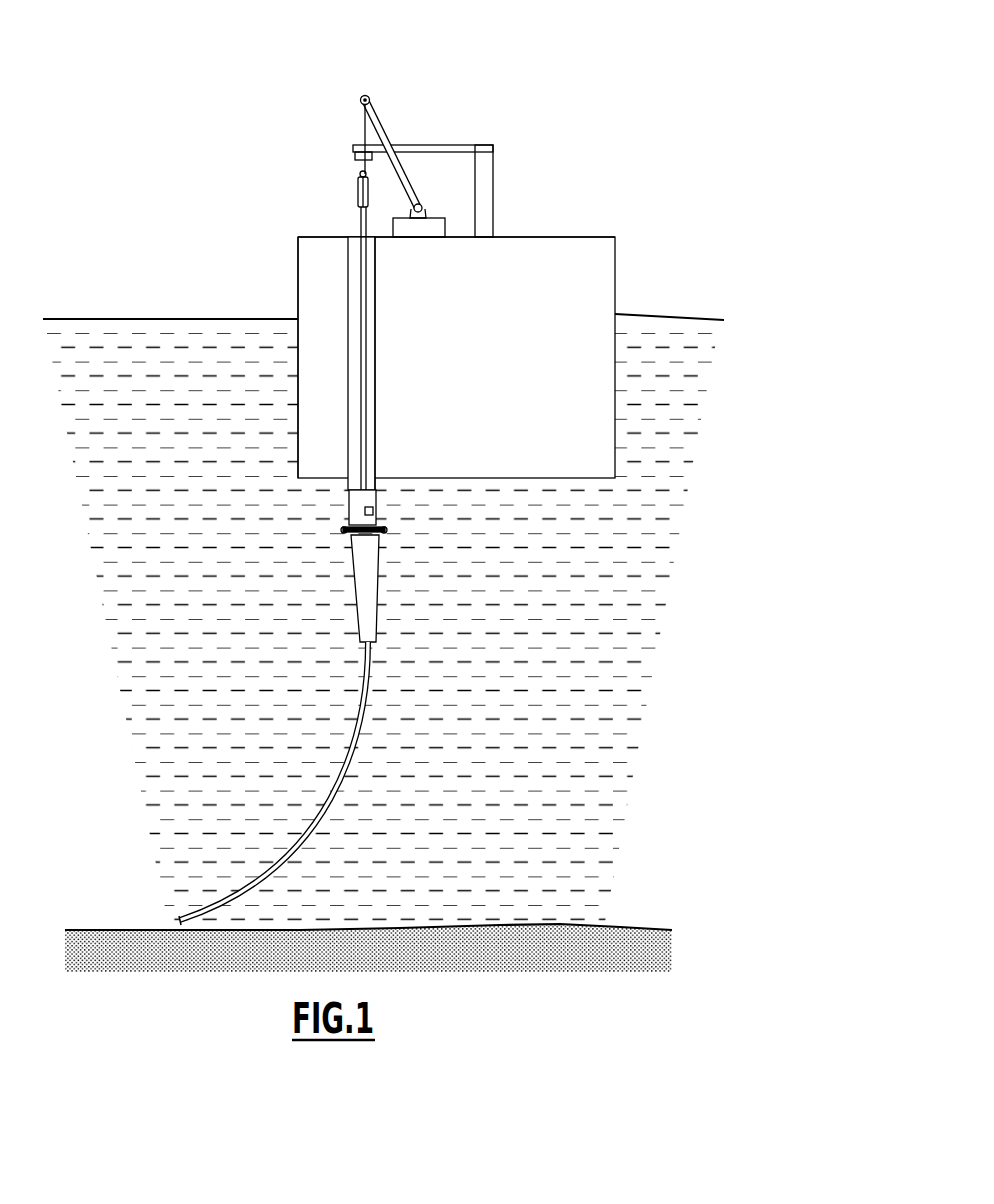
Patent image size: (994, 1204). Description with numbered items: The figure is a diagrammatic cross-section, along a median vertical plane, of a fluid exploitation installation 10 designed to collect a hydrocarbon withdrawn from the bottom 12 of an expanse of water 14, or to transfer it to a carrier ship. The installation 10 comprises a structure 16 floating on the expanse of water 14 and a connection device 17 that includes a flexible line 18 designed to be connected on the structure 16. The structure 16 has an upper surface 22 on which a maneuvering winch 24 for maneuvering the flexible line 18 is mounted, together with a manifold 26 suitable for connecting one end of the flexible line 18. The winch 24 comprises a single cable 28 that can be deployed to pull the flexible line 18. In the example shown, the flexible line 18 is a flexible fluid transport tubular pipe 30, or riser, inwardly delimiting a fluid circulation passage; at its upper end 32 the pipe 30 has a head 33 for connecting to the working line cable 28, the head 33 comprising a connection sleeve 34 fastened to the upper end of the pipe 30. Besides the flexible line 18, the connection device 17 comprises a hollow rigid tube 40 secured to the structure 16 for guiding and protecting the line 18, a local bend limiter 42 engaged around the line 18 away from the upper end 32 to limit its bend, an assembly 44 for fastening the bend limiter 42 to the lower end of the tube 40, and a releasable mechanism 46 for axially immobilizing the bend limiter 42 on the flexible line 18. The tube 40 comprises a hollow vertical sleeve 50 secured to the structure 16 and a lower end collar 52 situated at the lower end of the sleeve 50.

The fluid exploitation installation 10 is at (597, 113).
The bottom 12 is at (407, 927).
The expanse of water 14 is at (383, 620).
The structure 16 is at (620, 287).
The connection device 17 is at (312, 252).
The flexible line 18 is at (340, 805).
The upper surface 22 is at (583, 237).
The maneuvering winch 24 is at (405, 165).
The manifold 26 is at (499, 142).
The cable 28 is at (363, 115).
The tubular pipe 30 is at (366, 430).
The upper end 32 is at (358, 203).
The head 33 is at (368, 192).
The connection sleeve 34 is at (360, 226).
The hollow rigid tube 40 is at (345, 297).
The local bend limiter 42 is at (403, 577).
The fastening assembly 44 is at (388, 530).
The releasable mechanism 46 is at (372, 510).
The hollow vertical sleeve 50 is at (372, 338).
The lower end collar 52 is at (343, 530).